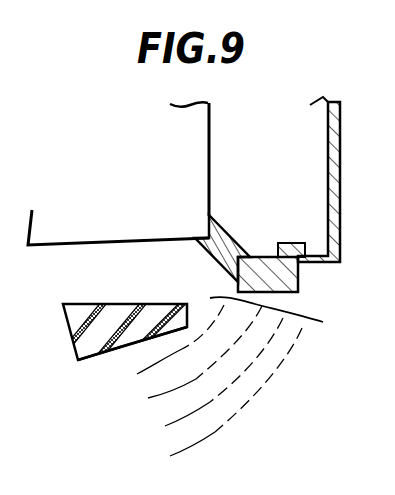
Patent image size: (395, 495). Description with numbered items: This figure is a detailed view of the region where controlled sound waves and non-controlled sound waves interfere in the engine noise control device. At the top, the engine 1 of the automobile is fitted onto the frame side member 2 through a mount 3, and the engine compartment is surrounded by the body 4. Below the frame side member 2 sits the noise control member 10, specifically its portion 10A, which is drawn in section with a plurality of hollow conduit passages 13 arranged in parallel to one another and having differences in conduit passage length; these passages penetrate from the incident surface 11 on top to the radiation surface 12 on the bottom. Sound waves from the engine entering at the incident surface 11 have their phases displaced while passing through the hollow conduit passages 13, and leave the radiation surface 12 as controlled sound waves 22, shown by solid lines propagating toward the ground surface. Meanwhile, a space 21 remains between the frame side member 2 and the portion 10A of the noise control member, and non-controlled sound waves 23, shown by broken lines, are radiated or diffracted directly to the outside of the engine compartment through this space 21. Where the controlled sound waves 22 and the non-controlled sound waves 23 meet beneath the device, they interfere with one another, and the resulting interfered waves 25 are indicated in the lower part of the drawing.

The engine 1 is at (198, 167).
The frame side member 2 is at (290, 281).
The mount 3 is at (227, 240).
The body 4 is at (340, 166).
The noise control member 10 is at (112, 330).
The portion of the noise control member 10A is at (92, 303).
The incident surface 11 is at (127, 305).
The radiation surface 12 is at (130, 347).
The hollow conduit passage 13 is at (117, 343).
The space 21 is at (283, 318).
The controlled sound waves 22 is at (193, 443).
The non-controlled sound waves 23 is at (290, 347).
The interfered waves 25 is at (265, 388).